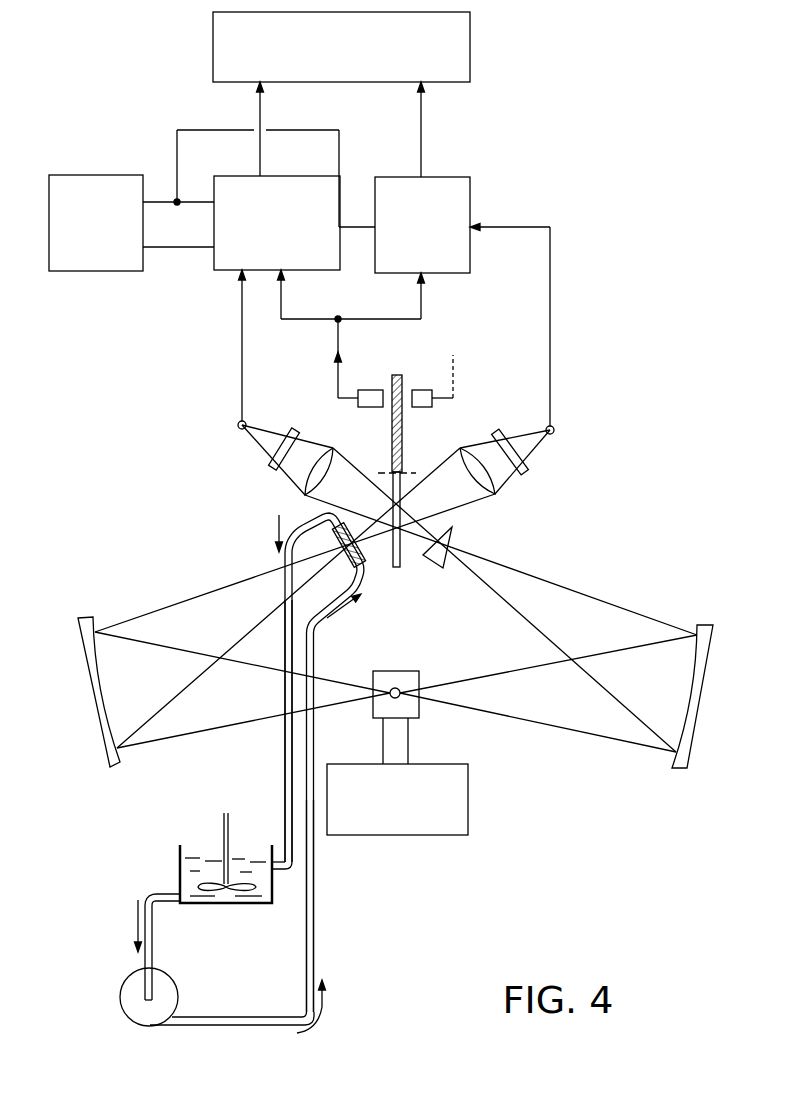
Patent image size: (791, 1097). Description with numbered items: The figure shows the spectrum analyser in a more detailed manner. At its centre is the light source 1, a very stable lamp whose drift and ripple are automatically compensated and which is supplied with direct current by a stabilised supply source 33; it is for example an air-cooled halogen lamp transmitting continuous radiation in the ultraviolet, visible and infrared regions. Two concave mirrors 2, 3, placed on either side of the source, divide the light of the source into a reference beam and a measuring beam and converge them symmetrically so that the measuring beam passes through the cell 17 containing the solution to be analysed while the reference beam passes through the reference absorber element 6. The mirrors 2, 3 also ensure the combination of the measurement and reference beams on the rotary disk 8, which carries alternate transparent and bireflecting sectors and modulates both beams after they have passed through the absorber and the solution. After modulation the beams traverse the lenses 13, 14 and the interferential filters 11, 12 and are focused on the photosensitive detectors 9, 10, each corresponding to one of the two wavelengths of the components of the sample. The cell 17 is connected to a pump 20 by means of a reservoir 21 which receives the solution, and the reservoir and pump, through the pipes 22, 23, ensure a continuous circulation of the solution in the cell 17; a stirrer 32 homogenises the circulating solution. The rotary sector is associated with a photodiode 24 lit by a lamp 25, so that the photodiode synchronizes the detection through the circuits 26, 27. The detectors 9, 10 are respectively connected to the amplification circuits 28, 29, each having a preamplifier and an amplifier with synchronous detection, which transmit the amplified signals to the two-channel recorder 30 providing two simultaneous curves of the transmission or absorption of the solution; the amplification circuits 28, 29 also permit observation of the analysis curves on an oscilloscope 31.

The light source 1 is at (410, 707).
The concave mirror 2 is at (88, 618).
The concave mirror 3 is at (705, 625).
The reference absorber element 6 is at (433, 560).
The rotary disk 8 is at (398, 372).
The photosensitive detector 9 is at (555, 428).
The photosensitive detector 10 is at (237, 424).
The interferential filter 11 is at (512, 452).
The interferential filter 12 is at (276, 452).
The lens 13 is at (485, 477).
The lens 14 is at (315, 478).
The cell 17 is at (358, 552).
The pump 20 is at (135, 1000).
The reservoir 21 is at (180, 852).
The pipe 22 is at (290, 750).
The pipe 23 is at (314, 930).
The photodiode 24 is at (365, 401).
The lamp 25 is at (432, 405).
The synchronization circuit 26 is at (281, 293).
The synchronization circuit 27 is at (421, 300).
The amplification circuit 28 is at (265, 238).
The amplification circuit 29 is at (410, 238).
The recorder 30 is at (331, 58).
The oscilloscope 31 is at (84, 235).
The stirrer 32 is at (222, 830).
The stabilised supply source 33 is at (385, 813).